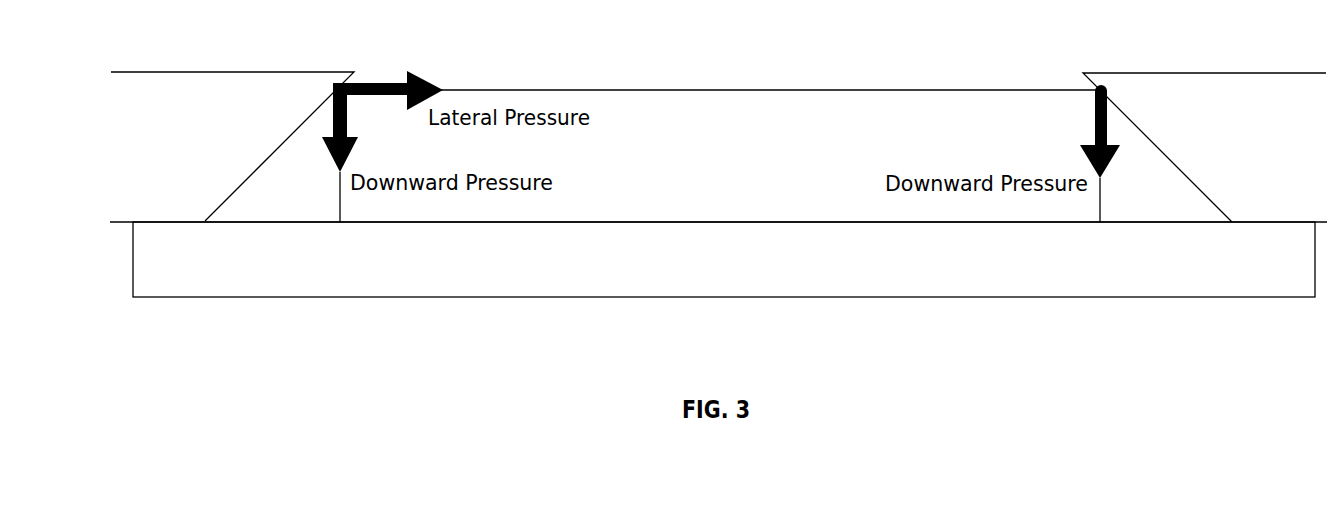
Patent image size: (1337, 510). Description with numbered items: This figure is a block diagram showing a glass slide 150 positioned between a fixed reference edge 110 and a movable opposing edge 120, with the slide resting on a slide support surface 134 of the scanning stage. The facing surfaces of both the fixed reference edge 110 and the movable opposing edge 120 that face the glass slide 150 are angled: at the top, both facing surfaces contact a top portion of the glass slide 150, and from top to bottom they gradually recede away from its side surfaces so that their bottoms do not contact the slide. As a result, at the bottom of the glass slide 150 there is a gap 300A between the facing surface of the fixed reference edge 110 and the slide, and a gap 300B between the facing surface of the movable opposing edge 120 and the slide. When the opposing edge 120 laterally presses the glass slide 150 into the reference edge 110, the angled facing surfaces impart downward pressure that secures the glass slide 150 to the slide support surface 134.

The movable opposing edge 120 is at (232, 146).
The fixed reference edge 110 is at (1204, 147).
The glass slide 150 is at (720, 137).
The slide support surface 134 is at (718, 259).
The gap 300A is at (1151, 200).
The gap 300B is at (292, 197).